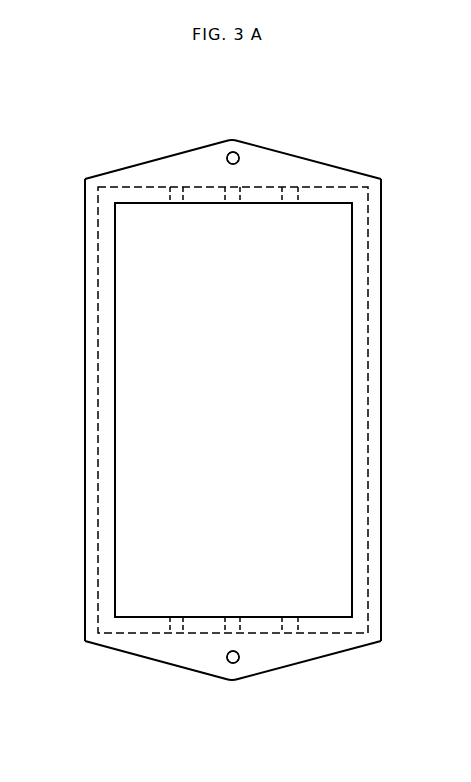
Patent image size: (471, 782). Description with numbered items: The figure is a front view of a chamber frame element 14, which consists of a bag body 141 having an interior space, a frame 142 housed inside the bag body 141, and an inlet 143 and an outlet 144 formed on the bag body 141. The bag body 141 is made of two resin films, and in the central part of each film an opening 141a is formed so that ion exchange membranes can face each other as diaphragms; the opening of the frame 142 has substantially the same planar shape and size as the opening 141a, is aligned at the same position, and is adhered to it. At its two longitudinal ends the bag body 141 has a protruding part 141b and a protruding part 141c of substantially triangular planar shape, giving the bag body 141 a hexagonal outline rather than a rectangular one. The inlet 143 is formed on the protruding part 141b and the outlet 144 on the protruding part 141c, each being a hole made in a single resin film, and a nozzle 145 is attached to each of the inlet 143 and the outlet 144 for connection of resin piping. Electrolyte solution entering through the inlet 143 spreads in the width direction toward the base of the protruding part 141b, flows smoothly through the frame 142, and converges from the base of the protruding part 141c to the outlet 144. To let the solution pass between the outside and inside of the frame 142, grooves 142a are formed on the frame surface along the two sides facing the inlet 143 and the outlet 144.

The chamber frame element 14 is at (216, 429).
The bag body 141 is at (198, 429).
The opening 141a is at (210, 464).
The protruding part 141b is at (233, 136).
The protruding part 141c is at (233, 700).
The frame 142 is at (206, 410).
The grooves 142a is at (290, 193).
The inlet 143 is at (236, 156).
The outlet 144 is at (237, 661).
The nozzle 145 is at (240, 158).